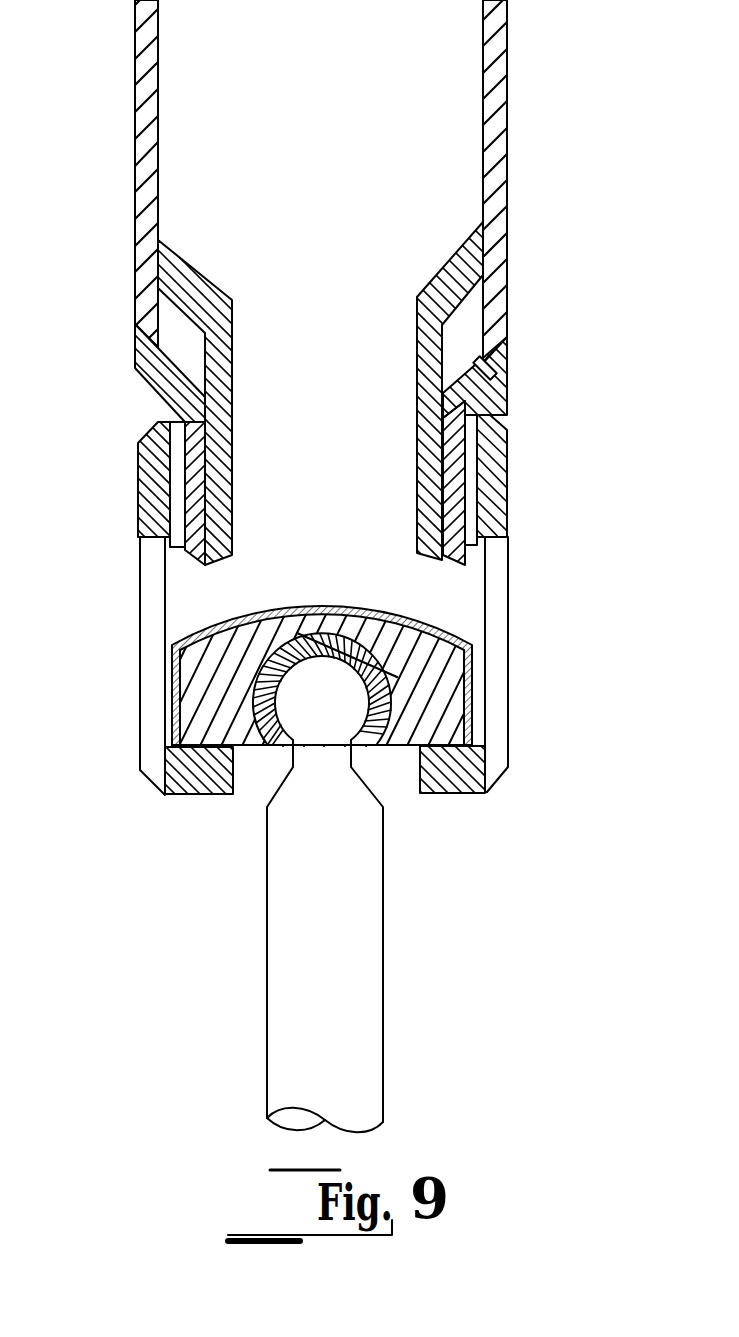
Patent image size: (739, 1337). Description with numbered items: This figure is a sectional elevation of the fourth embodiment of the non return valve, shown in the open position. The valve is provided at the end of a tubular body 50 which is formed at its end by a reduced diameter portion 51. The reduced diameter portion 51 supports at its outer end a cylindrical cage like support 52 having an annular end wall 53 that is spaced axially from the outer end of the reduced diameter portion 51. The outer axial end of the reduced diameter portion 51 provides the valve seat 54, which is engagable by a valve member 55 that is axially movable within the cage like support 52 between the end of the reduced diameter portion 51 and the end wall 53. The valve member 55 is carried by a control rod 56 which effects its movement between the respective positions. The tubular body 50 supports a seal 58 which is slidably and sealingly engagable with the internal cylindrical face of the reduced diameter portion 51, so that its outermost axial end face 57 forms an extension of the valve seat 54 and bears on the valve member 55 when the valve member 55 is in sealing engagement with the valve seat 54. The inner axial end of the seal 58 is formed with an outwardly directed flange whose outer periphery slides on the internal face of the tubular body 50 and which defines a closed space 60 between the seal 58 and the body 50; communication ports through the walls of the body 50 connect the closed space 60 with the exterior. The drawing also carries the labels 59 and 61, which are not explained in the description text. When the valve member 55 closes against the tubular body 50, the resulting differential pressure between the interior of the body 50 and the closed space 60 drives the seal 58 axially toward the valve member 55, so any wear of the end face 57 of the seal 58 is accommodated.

The tubular body 50 is at (533, 300).
The reduced diameter portion 51 is at (450, 442).
The cage like support 52 is at (392, 688).
The annular end wall 53 is at (466, 795).
The valve seat 54 is at (458, 567).
The valve member 55 is at (452, 681).
The control rod 56 is at (292, 933).
The outermost axial end face 57 is at (228, 562).
The seal 58 is at (412, 308).
The left tube 59 is at (170, 250).
The closed space 60 is at (475, 332).
The locking pin 61 is at (485, 381).